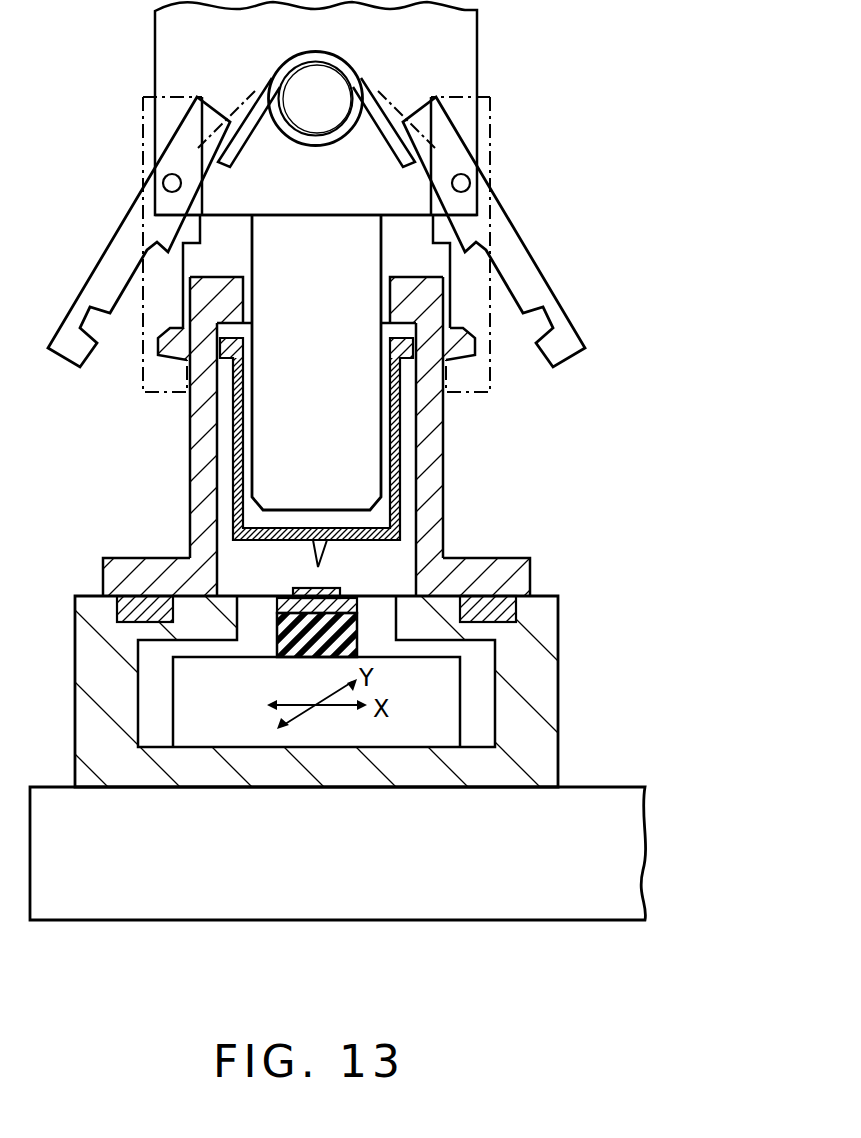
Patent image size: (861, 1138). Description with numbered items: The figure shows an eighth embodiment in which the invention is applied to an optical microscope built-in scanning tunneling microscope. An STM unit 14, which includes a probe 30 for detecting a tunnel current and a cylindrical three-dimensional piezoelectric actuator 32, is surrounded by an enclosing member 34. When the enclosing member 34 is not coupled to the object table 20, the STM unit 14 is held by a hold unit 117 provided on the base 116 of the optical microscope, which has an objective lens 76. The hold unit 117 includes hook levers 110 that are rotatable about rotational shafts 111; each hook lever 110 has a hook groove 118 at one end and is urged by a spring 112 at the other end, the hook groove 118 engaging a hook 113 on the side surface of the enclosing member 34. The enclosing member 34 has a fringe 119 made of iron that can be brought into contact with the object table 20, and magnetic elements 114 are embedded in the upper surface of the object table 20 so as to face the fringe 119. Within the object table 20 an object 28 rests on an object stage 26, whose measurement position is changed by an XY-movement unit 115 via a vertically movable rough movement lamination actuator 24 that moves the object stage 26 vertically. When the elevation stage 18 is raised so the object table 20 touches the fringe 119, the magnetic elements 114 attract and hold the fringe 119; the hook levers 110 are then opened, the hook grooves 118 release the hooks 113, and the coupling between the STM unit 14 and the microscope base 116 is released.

The STM unit 14 is at (188, 418).
The elevation stage 18 is at (152, 907).
The object table 20 is at (543, 680).
The rough movement lamination actuator 24 is at (277, 615).
The object stage 26 is at (440, 640).
The object 28 is at (310, 588).
The probe 30 is at (323, 550).
The three-dimensional piezoelectric actuator 32 is at (396, 517).
The enclosing member 34 is at (442, 463).
The objective lens 76 is at (268, 472).
The hook lever 110 is at (105, 255).
The rotational shaft 111 is at (163, 183).
The spring 112 is at (296, 60).
The hook 113 is at (173, 355).
The magnetic element 114 is at (118, 600).
The XY-movement unit 115 is at (185, 692).
The base 116 is at (478, 46).
The hold unit 117 is at (533, 219).
The hook groove 118 is at (528, 332).
The fringe 119 is at (118, 560).